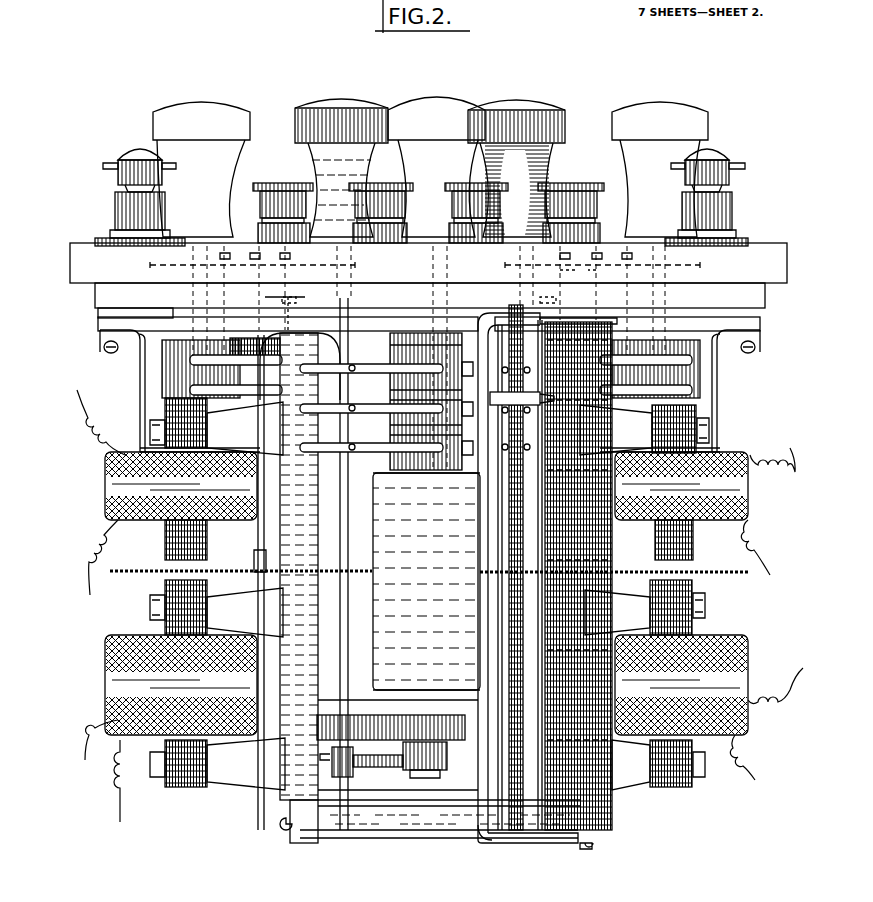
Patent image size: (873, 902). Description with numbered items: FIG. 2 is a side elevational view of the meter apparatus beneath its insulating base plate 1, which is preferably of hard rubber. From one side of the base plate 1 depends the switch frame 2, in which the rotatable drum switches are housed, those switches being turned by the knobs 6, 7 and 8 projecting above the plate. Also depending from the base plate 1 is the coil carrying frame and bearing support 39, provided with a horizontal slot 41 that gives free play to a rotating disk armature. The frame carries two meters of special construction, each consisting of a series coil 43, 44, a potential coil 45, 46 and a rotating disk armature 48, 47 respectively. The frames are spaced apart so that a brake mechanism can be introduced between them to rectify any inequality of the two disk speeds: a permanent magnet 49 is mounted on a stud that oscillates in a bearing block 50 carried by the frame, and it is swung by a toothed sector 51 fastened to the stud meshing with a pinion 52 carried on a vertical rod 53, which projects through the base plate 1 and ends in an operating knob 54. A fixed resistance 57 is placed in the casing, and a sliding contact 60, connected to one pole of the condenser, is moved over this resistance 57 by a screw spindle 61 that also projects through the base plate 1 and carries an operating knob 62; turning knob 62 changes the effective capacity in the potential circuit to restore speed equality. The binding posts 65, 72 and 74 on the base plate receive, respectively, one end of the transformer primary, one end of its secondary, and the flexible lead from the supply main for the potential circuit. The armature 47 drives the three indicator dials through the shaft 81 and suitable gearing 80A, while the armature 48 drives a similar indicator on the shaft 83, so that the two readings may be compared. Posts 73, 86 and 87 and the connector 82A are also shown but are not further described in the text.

The base plate 1 is at (428, 356).
The switch frame 2 is at (136, 410).
The knob 6 is at (661, 102).
The knob 7 is at (430, 99).
The knob 8 is at (203, 98).
The coil carrying frame and bearing support 39 is at (300, 566).
The horizontal slot 41 is at (299, 700).
The series coil 43 is at (105, 505).
The series coil 44 is at (748, 506).
The potential coil 45 is at (105, 707).
The potential coil 46 is at (748, 650).
The rotating disk armature 47 is at (750, 572).
The rotating disk armature 48 is at (110, 571).
The permanent magnet 49 is at (426, 581).
The bearing block 50 is at (432, 770).
The toothed sector 51 is at (396, 768).
The pinion 52 is at (350, 776).
The vertical rod 53 is at (340, 616).
The operating knob 54 is at (345, 101).
The fixed resistance 57 is at (612, 554).
The sliding contact 60 is at (522, 398).
The screw spindle 61 is at (520, 616).
The operating knob 62 is at (522, 101).
The binding post 65 is at (735, 209).
The binding post 72 is at (117, 209).
The post 73 is at (560, 187).
The binding post 74 is at (452, 187).
The gearing 80A is at (607, 298).
The shaft 81 is at (596, 280).
The connector 82A is at (297, 309).
The shaft 83 is at (258, 540).
The post 86 is at (362, 187).
The post 87 is at (268, 185).